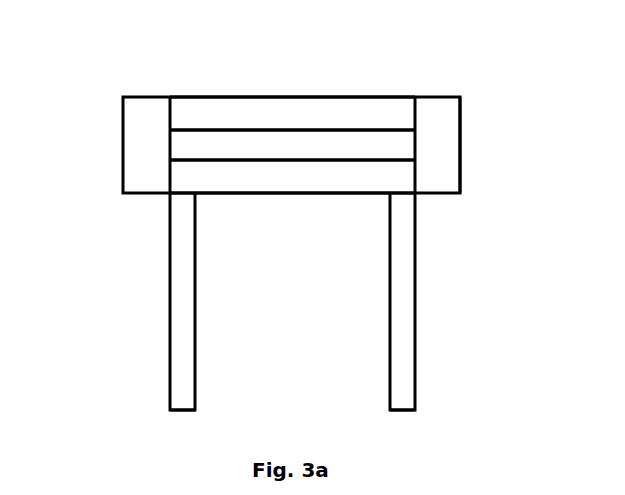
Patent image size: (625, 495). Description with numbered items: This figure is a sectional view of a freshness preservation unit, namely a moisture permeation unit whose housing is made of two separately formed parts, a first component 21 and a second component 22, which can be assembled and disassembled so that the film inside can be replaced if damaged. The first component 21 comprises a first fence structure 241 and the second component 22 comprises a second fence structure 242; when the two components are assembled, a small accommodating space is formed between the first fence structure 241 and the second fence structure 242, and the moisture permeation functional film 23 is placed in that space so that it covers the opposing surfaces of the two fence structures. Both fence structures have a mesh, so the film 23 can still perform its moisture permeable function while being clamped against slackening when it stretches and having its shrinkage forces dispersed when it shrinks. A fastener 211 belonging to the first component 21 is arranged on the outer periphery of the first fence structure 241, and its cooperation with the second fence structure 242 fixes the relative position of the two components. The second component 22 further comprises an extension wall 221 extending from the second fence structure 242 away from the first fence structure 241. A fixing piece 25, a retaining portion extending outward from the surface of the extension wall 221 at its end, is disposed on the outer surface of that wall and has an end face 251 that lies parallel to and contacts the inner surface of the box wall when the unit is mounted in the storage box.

The first component 21 is at (147, 156).
The fastener 211 is at (448, 158).
The second component 22 is at (183, 288).
The extension wall 221 is at (405, 288).
The moisture permeation functional film 23 is at (338, 143).
The first fence structure 241 is at (237, 115).
The second fence structure 242 is at (243, 178).
The fixing piece 25 is at (170, 404).
The end face 251 is at (415, 404).